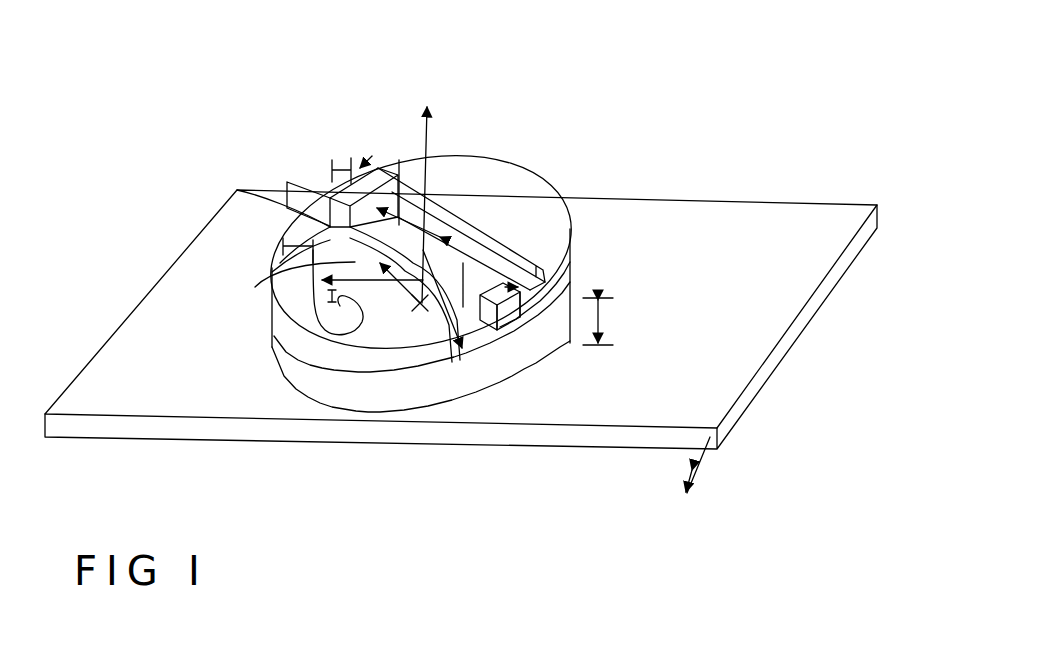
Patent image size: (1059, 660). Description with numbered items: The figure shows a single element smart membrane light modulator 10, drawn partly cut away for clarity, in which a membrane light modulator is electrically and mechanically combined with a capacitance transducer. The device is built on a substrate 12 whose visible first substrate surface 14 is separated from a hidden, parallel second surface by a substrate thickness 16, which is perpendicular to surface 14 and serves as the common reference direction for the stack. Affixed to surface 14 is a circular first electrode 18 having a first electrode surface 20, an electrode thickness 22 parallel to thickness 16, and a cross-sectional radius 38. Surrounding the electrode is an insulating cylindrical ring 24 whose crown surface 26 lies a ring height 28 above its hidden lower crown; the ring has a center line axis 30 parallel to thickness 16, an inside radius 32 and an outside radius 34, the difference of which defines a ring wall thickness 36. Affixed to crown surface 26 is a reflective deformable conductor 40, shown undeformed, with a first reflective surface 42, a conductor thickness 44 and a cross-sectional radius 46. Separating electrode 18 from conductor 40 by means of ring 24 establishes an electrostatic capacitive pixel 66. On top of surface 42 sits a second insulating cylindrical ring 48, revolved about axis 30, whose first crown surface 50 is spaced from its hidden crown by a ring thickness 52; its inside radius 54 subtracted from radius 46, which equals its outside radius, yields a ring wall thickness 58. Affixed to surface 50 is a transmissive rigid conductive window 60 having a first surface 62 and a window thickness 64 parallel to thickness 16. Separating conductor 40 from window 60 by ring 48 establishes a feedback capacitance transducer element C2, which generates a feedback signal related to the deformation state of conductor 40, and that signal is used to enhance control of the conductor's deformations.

The single element smart membrane light modulator 10 is at (800, 188).
The substrate 12 is at (747, 403).
The first substrate surface 14 is at (760, 350).
The substrate thickness 16 is at (690, 488).
The first electrode 18 is at (398, 335).
The first electrode surface 20 is at (368, 372).
The electrode thickness 22 is at (335, 296).
The insulating cylindrical ring 24 is at (403, 335).
The crown surface 26 is at (315, 335).
The ring height 28 is at (608, 322).
The center line axis 30 is at (430, 145).
The inside radius 32 is at (300, 278).
The outside radius 34 is at (440, 335).
The ring wall thickness 36 is at (293, 240).
The cross-sectional radius 38 is at (345, 260).
The reflective deformable conductor 40 is at (522, 245).
The first reflective surface 42 is at (552, 330).
The conductor thickness 44 is at (237, 190).
The cross-sectional radius 46 is at (468, 241).
The second insulating cylindrical ring 48 is at (486, 322).
The first crown surface 50 is at (575, 278).
The ring thickness 52 is at (283, 193).
The inside radius 54 is at (399, 165).
The ring wall thickness 58 is at (340, 165).
The transmissive rigid conductive window 60 is at (540, 208).
The first surface 62 is at (527, 190).
The window thickness 64 is at (357, 155).
The electrostatic capacitive pixel 66 is at (418, 395).
The feedback capacitance transducer element C2 is at (524, 157).